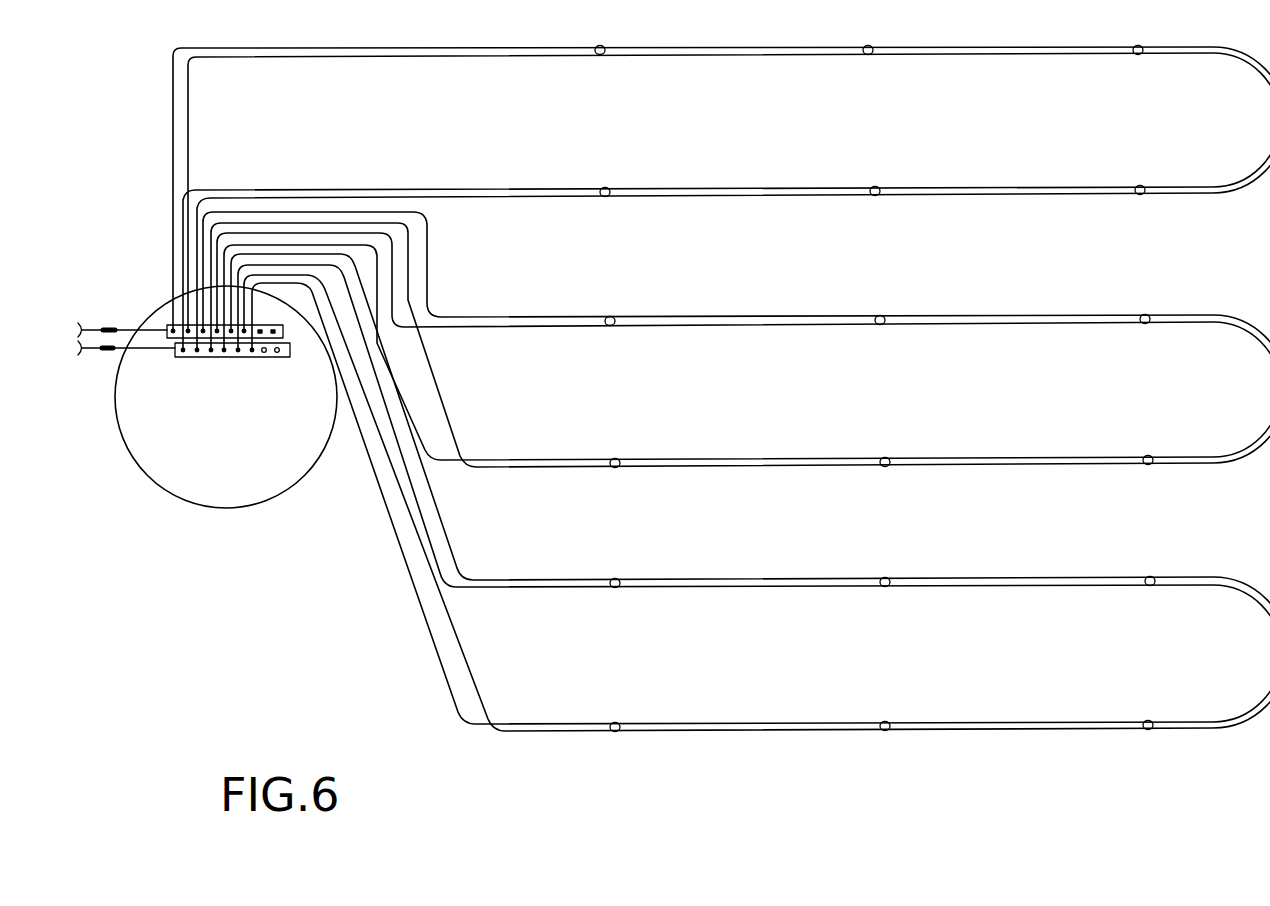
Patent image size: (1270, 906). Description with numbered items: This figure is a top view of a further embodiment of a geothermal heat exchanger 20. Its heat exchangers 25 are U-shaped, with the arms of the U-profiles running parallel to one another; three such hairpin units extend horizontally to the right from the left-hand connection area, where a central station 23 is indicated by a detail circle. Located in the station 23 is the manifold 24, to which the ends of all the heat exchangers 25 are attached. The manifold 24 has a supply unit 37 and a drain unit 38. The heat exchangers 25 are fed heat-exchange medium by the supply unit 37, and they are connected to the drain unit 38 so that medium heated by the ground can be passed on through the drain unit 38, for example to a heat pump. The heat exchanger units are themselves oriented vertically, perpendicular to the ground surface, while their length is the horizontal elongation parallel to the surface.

The geothermal heat exchanger 20 is at (246, 588).
The central station 23 is at (134, 480).
The manifold 24 is at (191, 380).
The heat exchangers 25 is at (1040, 204).
The supply unit 37 is at (284, 334).
The drain unit 38 is at (262, 358).